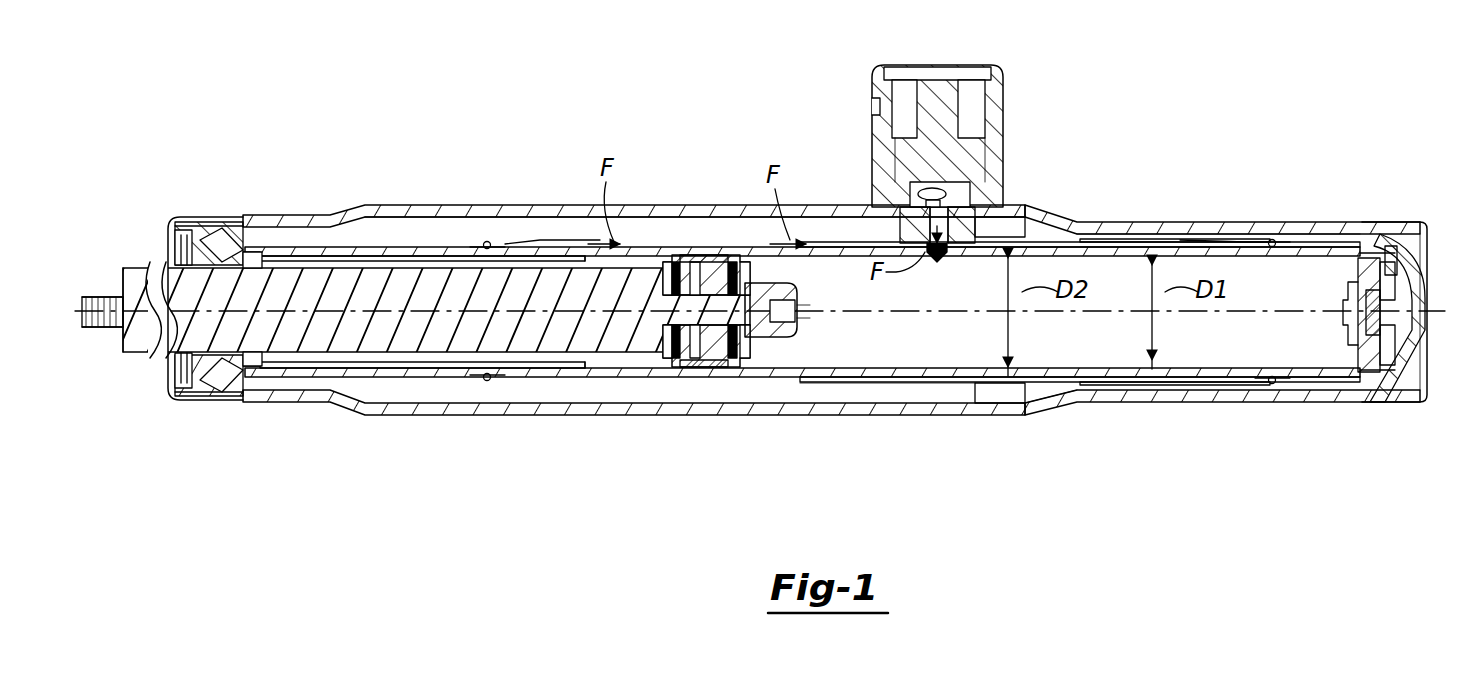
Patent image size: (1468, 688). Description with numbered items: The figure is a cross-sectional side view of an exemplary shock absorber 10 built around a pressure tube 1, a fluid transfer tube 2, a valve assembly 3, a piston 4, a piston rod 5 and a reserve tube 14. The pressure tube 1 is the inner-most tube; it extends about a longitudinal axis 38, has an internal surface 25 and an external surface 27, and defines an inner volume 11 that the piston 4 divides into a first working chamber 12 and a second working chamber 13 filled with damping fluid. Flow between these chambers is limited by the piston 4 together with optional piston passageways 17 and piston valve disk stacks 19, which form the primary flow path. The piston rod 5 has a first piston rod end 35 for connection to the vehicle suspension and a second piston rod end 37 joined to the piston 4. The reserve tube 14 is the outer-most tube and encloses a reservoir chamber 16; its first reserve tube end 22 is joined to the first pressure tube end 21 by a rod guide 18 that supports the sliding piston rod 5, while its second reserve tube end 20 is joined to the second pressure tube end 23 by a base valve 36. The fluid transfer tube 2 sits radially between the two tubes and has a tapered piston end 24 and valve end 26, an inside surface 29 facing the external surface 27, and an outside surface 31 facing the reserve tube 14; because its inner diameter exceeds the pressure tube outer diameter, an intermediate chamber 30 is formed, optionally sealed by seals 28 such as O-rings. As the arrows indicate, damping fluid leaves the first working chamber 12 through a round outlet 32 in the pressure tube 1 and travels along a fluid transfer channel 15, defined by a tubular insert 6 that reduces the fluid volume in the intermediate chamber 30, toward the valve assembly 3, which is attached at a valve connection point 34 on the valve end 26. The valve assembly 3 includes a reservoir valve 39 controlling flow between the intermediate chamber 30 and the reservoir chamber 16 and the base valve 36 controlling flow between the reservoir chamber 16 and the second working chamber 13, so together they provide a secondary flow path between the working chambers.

The pressure tube 1 is at (437, 244).
The fluid transfer tube 2 is at (628, 236).
The valve assembly 3 is at (1014, 88).
The piston 4 is at (720, 283).
The piston rod 5 is at (335, 358).
The insert 6 is at (783, 381).
The shock absorber 10 is at (321, 104).
The inner volume 11 is at (757, 262).
The first working chamber 12 is at (527, 368).
The second working chamber 13 is at (1085, 338).
The reserve tube 14 is at (415, 206).
The fluid transfer channel 15 is at (830, 242).
The reservoir chamber 16 is at (470, 215).
The piston passageways 17 is at (690, 258).
The rod guide 18 is at (213, 380).
The piston valve disk stacks 19 is at (750, 336).
The second reserve tube end 20 is at (1410, 222).
The first pressure tube end 21 is at (251, 378).
The first reserve tube end 22 is at (170, 236).
The second pressure tube end 23 is at (1330, 246).
The piston end 24 is at (512, 243).
The internal surface 25 is at (1226, 360).
The valve end 26 is at (1272, 239).
The external surface 27 is at (1188, 385).
The seals 28 is at (487, 381).
The inside surface 29 is at (1046, 384).
The intermediate chamber 30 is at (968, 378).
The outside surface 31 is at (912, 382).
The outlet 32 is at (560, 258).
The valve connection point 34 is at (941, 252).
The first piston rod end 35 is at (128, 266).
The base valve 36 is at (1372, 380).
The second piston rod end 37 is at (610, 342).
The longitudinal axis 38 is at (133, 347).
The reservoir valve 39 is at (893, 146).